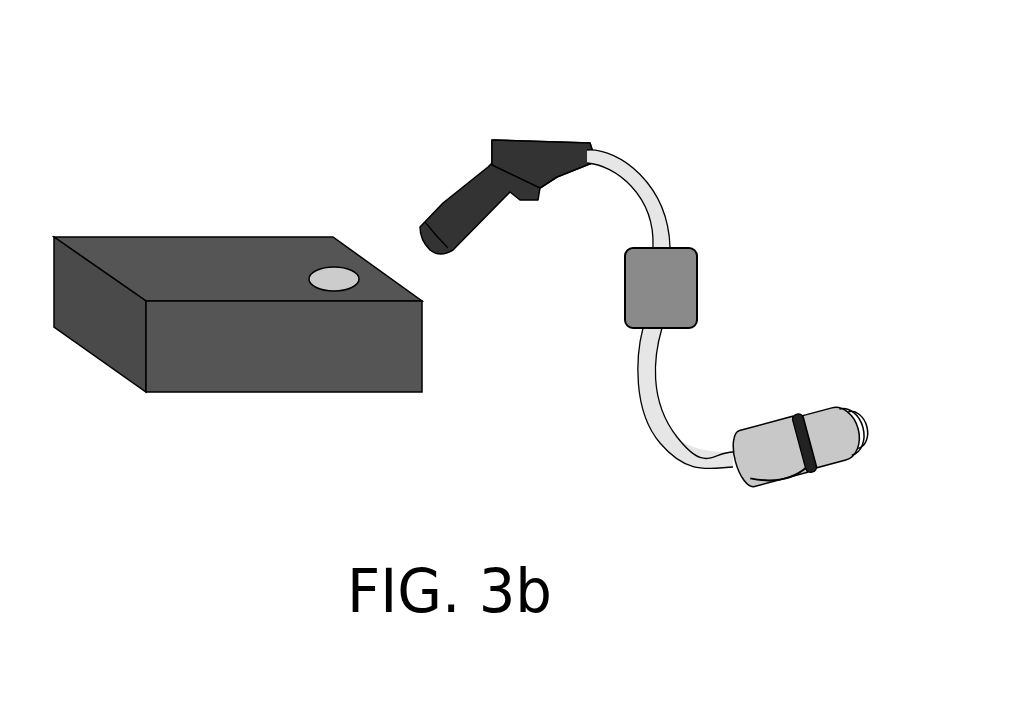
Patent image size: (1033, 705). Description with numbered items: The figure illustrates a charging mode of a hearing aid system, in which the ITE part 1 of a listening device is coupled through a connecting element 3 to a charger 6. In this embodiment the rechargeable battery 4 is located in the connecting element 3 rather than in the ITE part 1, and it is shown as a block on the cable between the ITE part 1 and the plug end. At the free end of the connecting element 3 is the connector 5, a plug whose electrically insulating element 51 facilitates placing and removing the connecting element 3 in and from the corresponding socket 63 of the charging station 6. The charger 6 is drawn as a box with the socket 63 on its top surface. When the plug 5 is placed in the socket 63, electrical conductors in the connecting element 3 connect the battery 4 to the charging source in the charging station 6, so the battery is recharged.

The ITE part 1 is at (780, 440).
The connecting element 3 is at (627, 167).
The rechargeable battery 4 is at (668, 297).
The connector 5 is at (486, 142).
The electrically insulating element 51 is at (543, 137).
The charging station 6 is at (168, 272).
The socket 63 is at (335, 277).